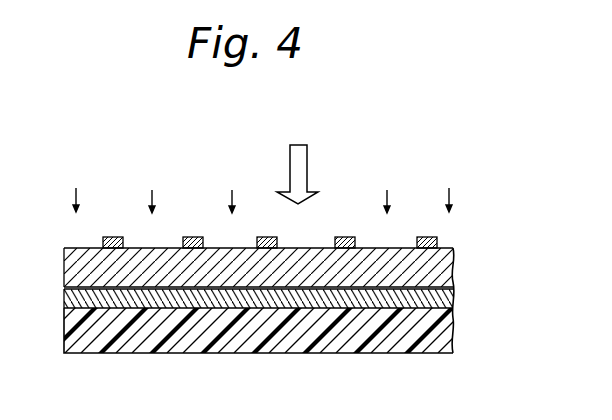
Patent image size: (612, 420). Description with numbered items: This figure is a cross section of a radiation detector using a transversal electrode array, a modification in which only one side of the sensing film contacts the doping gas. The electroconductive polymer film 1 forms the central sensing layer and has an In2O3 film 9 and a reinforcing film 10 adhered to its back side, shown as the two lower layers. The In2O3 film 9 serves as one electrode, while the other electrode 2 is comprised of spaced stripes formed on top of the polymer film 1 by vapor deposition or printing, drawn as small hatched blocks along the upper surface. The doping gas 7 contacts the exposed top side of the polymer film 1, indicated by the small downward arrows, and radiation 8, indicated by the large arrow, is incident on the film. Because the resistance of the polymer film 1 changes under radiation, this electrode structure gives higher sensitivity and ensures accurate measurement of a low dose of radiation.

The electroconductive polymer film 1 is at (440, 269).
The electrode 2 is at (112, 237).
The doping gas 7 is at (262, 187).
The radiation 8 is at (302, 163).
The In2O3 film 9 is at (442, 298).
The reinforcing film 10 is at (442, 337).